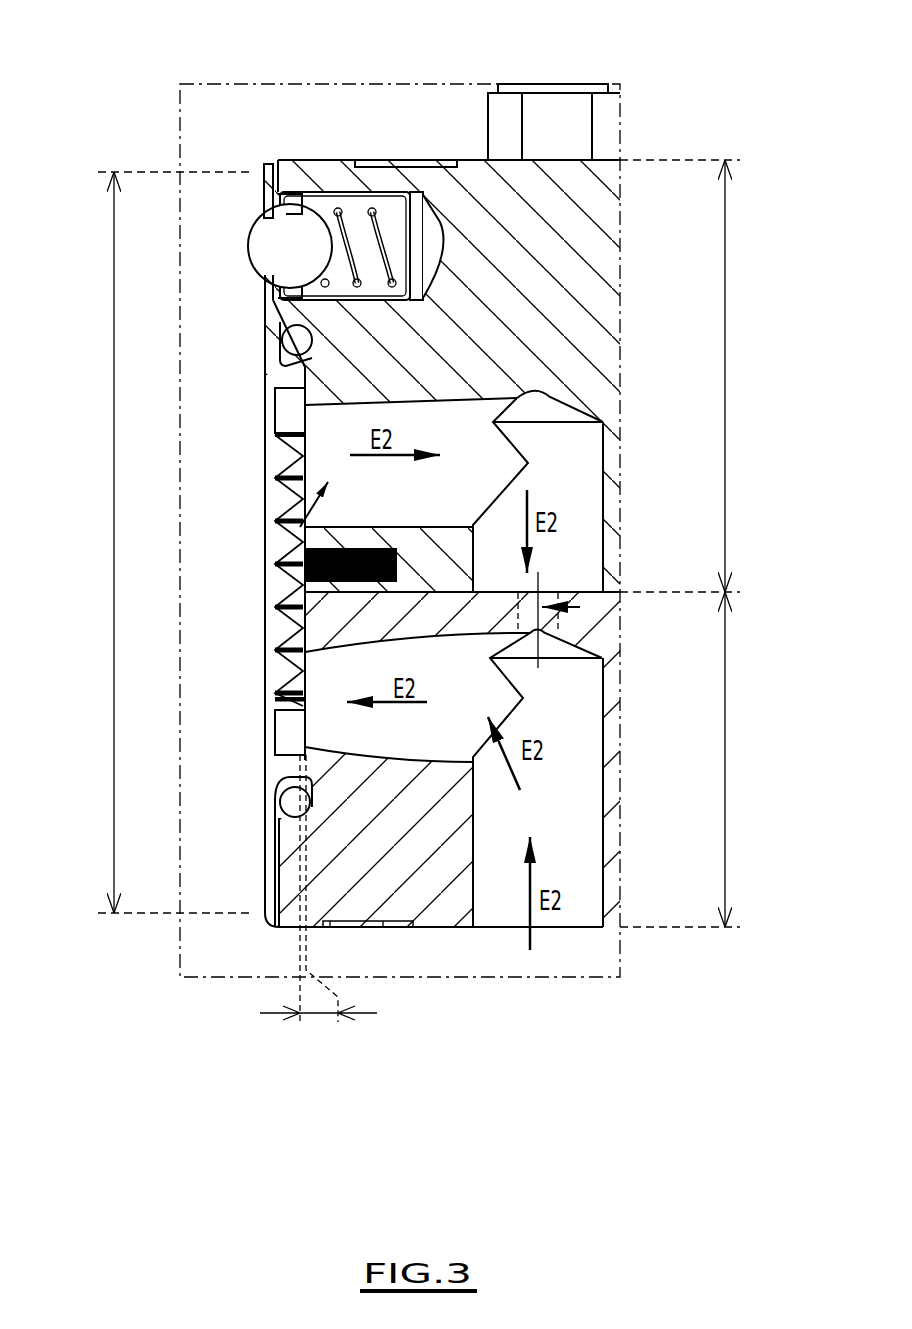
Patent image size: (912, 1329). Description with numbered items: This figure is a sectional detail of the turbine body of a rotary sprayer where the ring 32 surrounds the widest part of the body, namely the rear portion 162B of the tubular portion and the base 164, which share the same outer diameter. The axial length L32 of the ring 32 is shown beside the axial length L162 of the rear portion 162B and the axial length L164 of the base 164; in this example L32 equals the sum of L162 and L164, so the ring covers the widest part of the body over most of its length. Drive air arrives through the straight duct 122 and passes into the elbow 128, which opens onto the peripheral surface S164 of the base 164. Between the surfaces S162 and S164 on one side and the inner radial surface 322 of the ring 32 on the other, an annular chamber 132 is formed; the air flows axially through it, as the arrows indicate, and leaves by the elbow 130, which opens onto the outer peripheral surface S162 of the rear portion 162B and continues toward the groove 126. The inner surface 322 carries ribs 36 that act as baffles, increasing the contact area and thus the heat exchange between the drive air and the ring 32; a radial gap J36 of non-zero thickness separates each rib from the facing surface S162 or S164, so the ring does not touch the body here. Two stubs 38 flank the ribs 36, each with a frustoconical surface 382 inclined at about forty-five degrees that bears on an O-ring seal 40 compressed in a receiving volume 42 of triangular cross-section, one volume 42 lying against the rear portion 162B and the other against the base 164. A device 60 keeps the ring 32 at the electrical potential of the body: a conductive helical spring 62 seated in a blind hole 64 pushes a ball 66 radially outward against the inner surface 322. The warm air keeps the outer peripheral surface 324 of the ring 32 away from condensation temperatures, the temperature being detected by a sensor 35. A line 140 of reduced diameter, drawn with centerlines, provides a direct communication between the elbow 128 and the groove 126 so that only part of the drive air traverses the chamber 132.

The potential-maintaining device 60 is at (375, 37).
The ball 66 is at (298, 230).
The helical spring 62 is at (348, 230).
The blind hole 64 is at (420, 238).
The rear portion of tubular portion 162B is at (478, 190).
The outer peripheral surface of rear portion S162 is at (258, 166).
The seal 40 is at (312, 288).
The ring 32 is at (278, 343).
The frustoconical surface 382 is at (307, 360).
The elbow 130 is at (558, 414).
The stub 38 is at (295, 378).
The annular chamber 132 is at (290, 518).
The sensor 35 is at (400, 527).
The ribs 36 is at (285, 584).
The groove 126 is at (575, 570).
The axial length of rear portion L162 is at (702, 376).
The axial length of ring L32 is at (163, 542).
The line 140 is at (620, 615).
The elbow 128 is at (570, 680).
The outer peripheral surface of ring 324 is at (262, 779).
The axial length of base L164 is at (702, 759).
The base 164 is at (343, 872).
The receiving volume 42 is at (312, 782).
The inner radial surface of ring 322 is at (285, 864).
The peripheral surface of base S164 is at (273, 902).
The duct 122 is at (582, 885).
The radial gap J36 is at (318, 901).